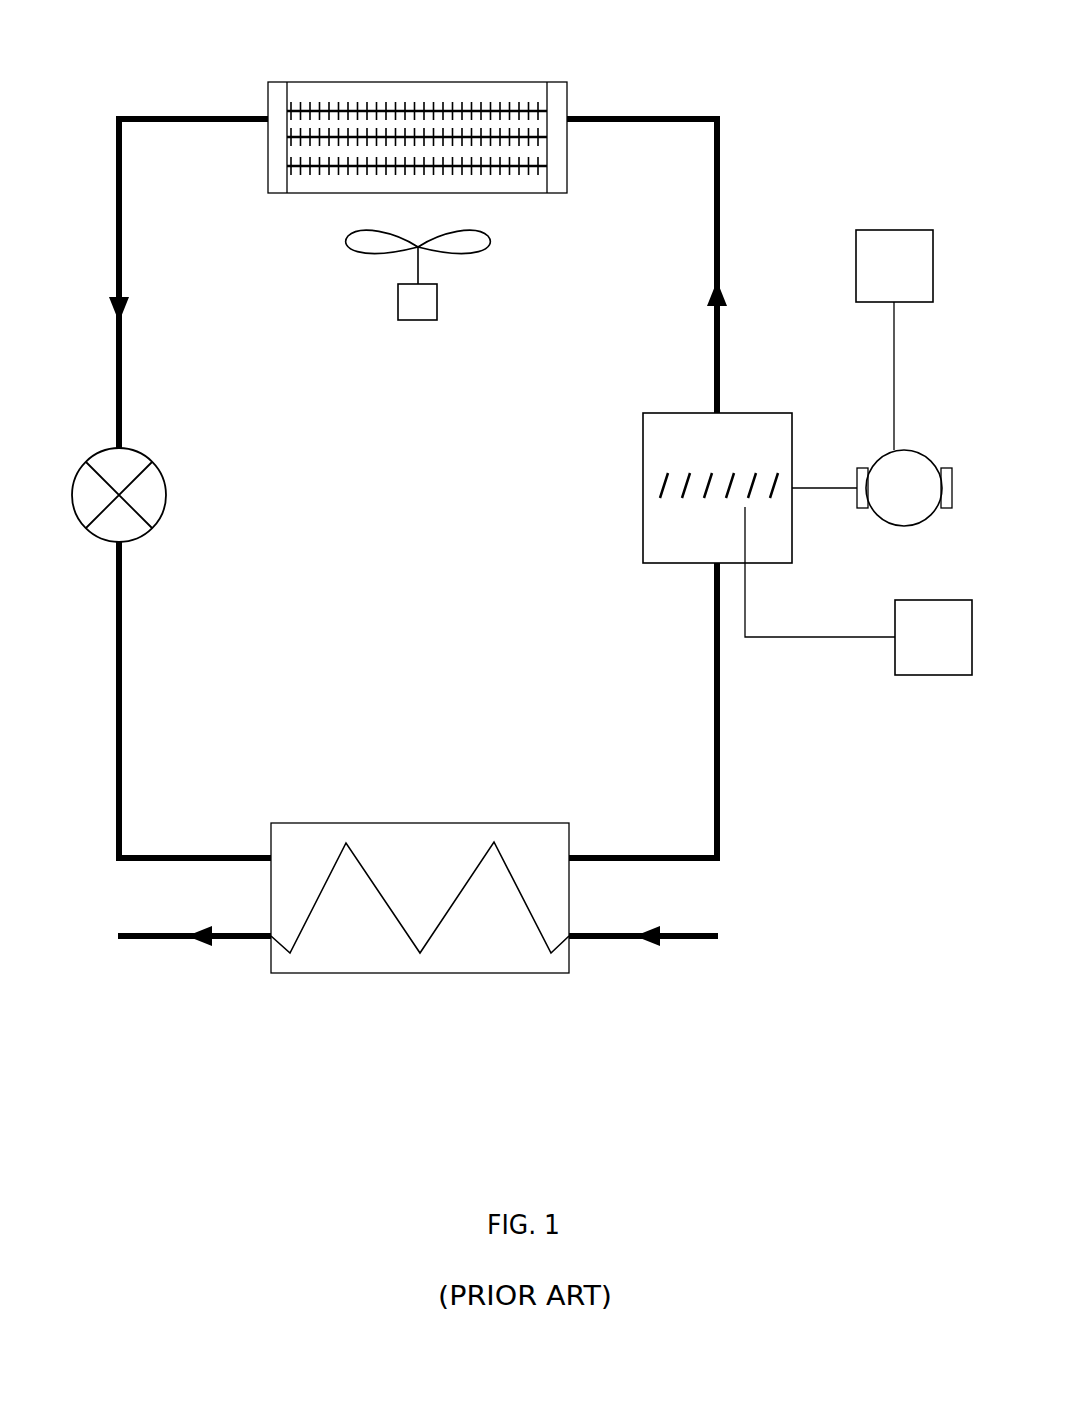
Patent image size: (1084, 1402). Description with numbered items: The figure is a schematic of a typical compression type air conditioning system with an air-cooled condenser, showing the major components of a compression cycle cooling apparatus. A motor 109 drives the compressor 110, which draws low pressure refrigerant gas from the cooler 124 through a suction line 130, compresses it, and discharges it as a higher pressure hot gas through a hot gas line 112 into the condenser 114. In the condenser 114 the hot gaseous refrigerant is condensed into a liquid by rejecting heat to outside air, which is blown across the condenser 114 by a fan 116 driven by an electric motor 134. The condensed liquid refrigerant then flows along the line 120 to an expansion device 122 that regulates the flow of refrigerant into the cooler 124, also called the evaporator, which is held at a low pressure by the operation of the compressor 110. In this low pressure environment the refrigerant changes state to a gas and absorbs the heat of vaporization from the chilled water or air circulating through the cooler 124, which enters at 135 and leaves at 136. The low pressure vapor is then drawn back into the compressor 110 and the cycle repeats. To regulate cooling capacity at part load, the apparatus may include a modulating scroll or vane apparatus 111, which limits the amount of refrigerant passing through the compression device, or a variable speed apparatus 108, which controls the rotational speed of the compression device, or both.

The variable speed apparatus 108 is at (893, 230).
The motor 109 is at (877, 452).
The compressor 110 is at (640, 488).
The modulating scroll or vane apparatus 111 is at (930, 675).
The hot gas line 112 is at (725, 137).
The condenser 114 is at (463, 80).
The fan 116 is at (483, 267).
The liquid line 120 is at (128, 157).
The expansion device 122 is at (157, 450).
The cooler 124 is at (420, 812).
The suction line 130 is at (708, 694).
The electric motor 134 is at (392, 312).
The cooler inlet 135 is at (690, 952).
The cooler outlet 136 is at (160, 953).